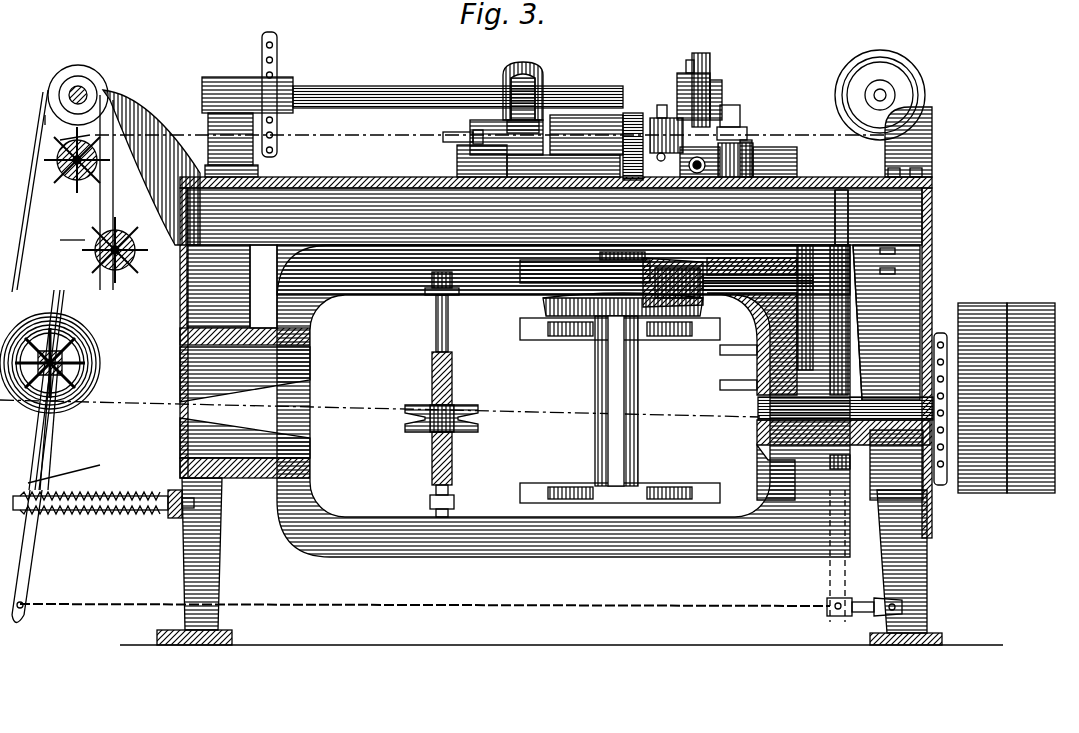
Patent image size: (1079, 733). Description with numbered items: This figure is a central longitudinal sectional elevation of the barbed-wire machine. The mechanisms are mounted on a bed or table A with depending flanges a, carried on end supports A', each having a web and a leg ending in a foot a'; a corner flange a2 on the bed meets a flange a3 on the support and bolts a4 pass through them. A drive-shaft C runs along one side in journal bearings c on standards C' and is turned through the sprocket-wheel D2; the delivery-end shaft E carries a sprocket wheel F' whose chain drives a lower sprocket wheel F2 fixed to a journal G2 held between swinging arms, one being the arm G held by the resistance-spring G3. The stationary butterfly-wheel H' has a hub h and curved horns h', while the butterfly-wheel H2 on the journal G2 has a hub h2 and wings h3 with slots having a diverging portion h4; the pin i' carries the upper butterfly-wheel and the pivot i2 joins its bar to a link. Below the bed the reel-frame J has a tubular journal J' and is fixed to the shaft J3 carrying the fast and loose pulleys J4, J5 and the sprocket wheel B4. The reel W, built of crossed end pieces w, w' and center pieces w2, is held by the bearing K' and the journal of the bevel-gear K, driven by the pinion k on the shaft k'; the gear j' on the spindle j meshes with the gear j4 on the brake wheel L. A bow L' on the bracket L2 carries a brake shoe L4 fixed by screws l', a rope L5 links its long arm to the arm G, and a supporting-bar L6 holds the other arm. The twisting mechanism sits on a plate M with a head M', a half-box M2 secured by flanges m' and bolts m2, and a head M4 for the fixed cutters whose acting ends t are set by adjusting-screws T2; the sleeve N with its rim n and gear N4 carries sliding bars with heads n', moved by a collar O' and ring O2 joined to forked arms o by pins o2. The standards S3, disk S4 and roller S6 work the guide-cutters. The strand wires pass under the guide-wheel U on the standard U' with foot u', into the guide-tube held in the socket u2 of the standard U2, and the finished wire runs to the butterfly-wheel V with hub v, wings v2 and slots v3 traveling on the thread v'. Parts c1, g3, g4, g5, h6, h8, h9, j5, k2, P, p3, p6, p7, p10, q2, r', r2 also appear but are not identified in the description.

The bed or table A is at (556, 344).
The end support A' is at (554, 555).
The foot or flange a' is at (561, 629).
The depending flange a is at (510, 244).
The corner flange a2 is at (235, 262).
The support flange a3 is at (944, 230).
The bolt a4 is at (240, 235).
The sprocket or chain wheel B4 is at (943, 394).
The drive-shaft C is at (412, 114).
The standard or upright C' is at (490, 126).
The journal bearing or box c is at (464, 90).
The bearing c1 is at (638, 183).
The sprocket-wheel D2 is at (277, 58).
The drive-shaft E is at (100, 92).
The sprocket or chain wheel F' is at (83, 82).
The sprocket or chain wheel F2 is at (70, 335).
The swinging or oscillating bar or arm G is at (70, 215).
The journal or pin G2 is at (65, 365).
The resistance-spring G3 is at (129, 466).
The rod g3 is at (64, 470).
The spring g4 is at (45, 508).
The spring seat g5 is at (172, 512).
The butterfly-wheel H' is at (77, 160).
The butterfly-wheel H2 is at (70, 358).
The center or hub h is at (90, 192).
The horns or arms h' is at (52, 129).
The center or hub h2 is at (60, 330).
The radial wing h3 is at (65, 385).
The diverging portion of slot h4 is at (55, 390).
The pin h6 is at (75, 348).
The column h8 is at (694, 80).
The bolt h9 is at (678, 60).
The journal or pin i' is at (35, 146).
The pin or pivot i2 is at (56, 242).
The reel-carrying frame J is at (563, 401).
The tubular neck or journal J' is at (245, 402).
The shaft J3 is at (765, 425).
The fast pulley J4 is at (982, 398).
The loose pulley J5 is at (1031, 398).
The journal pin or spindle j is at (752, 344).
The gear j' is at (753, 405).
The gear j4 is at (826, 464).
The block j5 is at (893, 498).
The bevel-gear K is at (623, 334).
The bearing or support K' is at (620, 452).
The bevel-pinion k is at (758, 274).
The shaft or spindle k' is at (763, 267).
The collar k2 is at (719, 309).
The brake wheel or disk L is at (845, 439).
The bow L' is at (905, 322).
The bracket L2 is at (850, 220).
The brake shoe or piece L4 is at (822, 549).
The rope L5 is at (425, 590).
The supporting-bar L6 is at (860, 540).
The screw l' is at (822, 320).
The plate M is at (586, 140).
The block or head M' is at (465, 209).
The half-box M2 is at (580, 120).
The head M4 is at (545, 148).
The flange m' is at (621, 92).
The bolt m2 is at (589, 151).
The revoluble sleeve N is at (630, 130).
The gear-wheel N4 is at (637, 110).
The flange or rim n is at (522, 165).
The head or projection n' is at (546, 165).
The sliding collar or head O' is at (742, 96).
The ring O2 is at (718, 80).
The arm of forked end o is at (650, 128).
The pivotal bolt or pin o2 is at (666, 122).
The cylinder P is at (816, 152).
The shaft p3 is at (611, 271).
The plate p6 is at (736, 122).
The pin p7 is at (702, 110).
The pin p10 is at (742, 108).
The block q2 is at (462, 161).
The rod r' is at (463, 340).
The flange r2 is at (262, 328).
The standard or upright S3 is at (512, 93).
The disk S4 is at (530, 80).
The roller S6 is at (520, 68).
The adjusting-screw T2 is at (443, 137).
The acting end of cutter t is at (895, 330).
The guide-wheel U is at (880, 81).
The standard or upright U' is at (920, 142).
The flange or foot u' is at (922, 173).
The standard or upright U2 is at (755, 160).
The head or socket u2 is at (745, 142).
The butterfly-wheel V is at (458, 394).
The center or hub v is at (441, 405).
The screw-thread v' is at (464, 367).
The wing v2 is at (478, 425).
The slot v3 is at (478, 412).
The reel W is at (628, 401).
The crossed end piece w is at (730, 409).
The crossed end piece w' is at (727, 403).
The center piece w2 is at (630, 462).